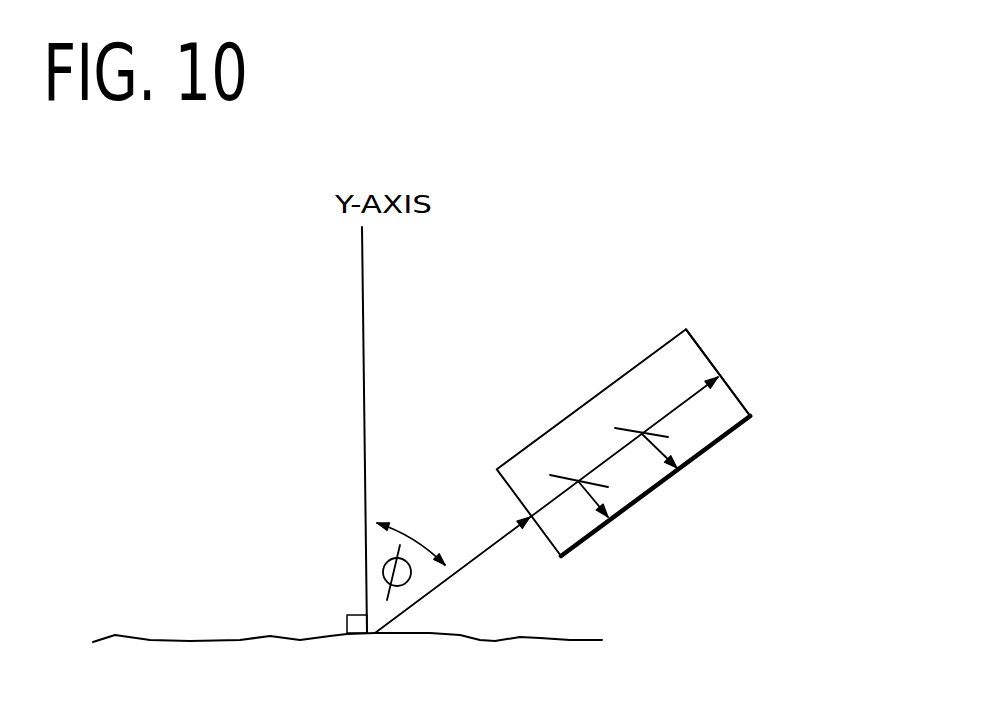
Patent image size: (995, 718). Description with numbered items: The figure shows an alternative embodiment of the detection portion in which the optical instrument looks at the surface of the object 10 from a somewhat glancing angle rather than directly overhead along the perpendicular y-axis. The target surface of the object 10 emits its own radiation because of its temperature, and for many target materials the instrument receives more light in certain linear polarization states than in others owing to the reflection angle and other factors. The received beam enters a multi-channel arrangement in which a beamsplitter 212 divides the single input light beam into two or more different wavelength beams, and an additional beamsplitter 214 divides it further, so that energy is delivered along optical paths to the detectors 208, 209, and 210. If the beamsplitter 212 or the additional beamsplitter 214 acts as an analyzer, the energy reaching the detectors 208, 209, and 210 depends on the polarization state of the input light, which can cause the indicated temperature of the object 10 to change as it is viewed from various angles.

The object 10 is at (368, 646).
The detector 208 is at (655, 495).
The detector 209 is at (629, 442).
The detector 210 is at (749, 372).
The beamsplitter 212 is at (553, 473).
The additional beamsplitter 214 is at (632, 427).